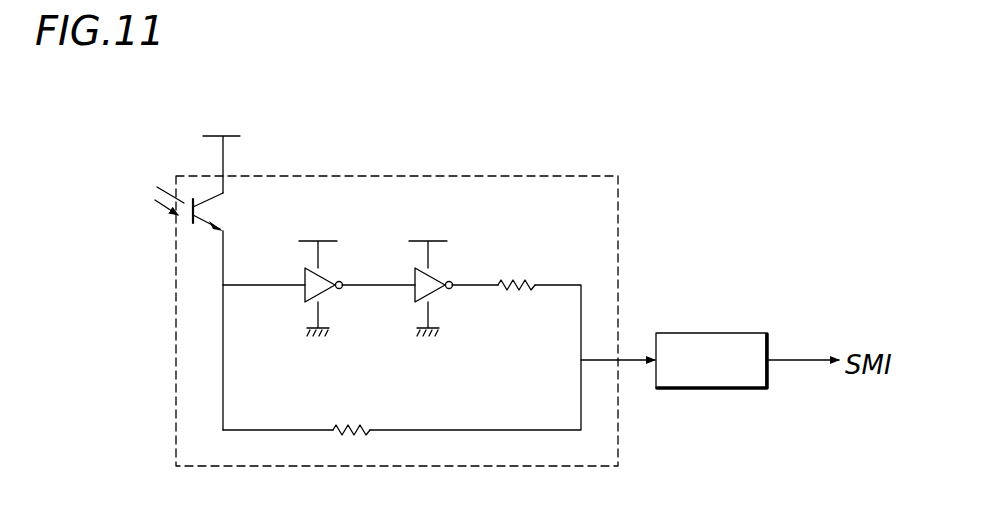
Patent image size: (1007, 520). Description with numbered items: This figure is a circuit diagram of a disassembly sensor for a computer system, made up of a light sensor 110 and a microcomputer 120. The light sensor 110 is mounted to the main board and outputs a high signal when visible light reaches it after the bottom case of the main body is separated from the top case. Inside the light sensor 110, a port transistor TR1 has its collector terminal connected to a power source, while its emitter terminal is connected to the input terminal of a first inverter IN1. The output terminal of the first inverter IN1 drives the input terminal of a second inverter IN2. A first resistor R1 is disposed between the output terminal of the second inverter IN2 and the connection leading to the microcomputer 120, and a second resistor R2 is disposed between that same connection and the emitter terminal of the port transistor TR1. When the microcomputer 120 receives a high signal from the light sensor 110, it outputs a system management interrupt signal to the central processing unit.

The light sensor 110 is at (440, 288).
The microcomputer 120 is at (712, 333).
The port transistor TR1 is at (208, 308).
The first inverter IN1 is at (305, 296).
The second inverter IN2 is at (415, 296).
The first resistor R1 is at (516, 272).
The second resistor R2 is at (351, 417).